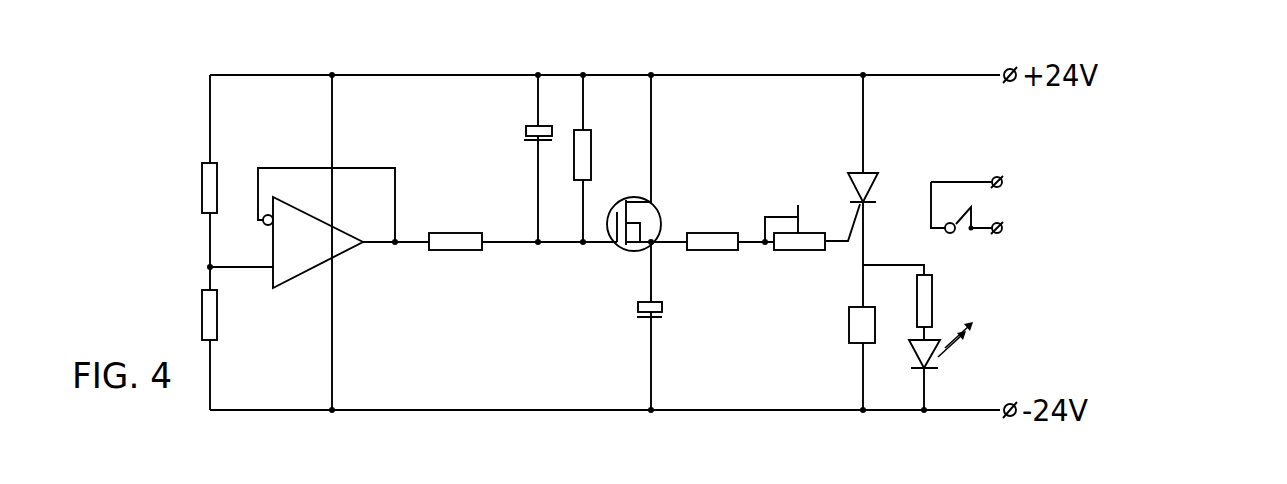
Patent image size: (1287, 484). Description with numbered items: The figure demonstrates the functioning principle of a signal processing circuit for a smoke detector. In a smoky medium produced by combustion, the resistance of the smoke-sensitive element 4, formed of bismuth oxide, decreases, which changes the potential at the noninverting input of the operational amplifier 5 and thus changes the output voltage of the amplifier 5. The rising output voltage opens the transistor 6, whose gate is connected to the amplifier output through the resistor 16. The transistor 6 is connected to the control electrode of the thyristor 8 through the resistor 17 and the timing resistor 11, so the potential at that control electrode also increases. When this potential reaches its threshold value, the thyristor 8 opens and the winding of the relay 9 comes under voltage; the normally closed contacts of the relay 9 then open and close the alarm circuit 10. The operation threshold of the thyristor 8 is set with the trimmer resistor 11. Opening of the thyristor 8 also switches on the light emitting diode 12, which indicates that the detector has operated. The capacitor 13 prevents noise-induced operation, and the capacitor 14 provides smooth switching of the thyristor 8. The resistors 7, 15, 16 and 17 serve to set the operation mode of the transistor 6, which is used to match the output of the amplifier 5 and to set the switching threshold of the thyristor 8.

The smoke-sensitive element 4 is at (217, 315).
The operational amplifier 5 is at (345, 255).
The transistor 6 is at (622, 249).
The resistor 7 is at (217, 164).
The thyristor 8 is at (855, 173).
The relay 9 is at (864, 345).
The alarm circuit 10 is at (981, 205).
The timing resistor 11 is at (780, 250).
The light emitting diode 12 is at (938, 357).
The capacitor 13 is at (524, 131).
The capacitor 14 is at (662, 312).
The resistor 15 is at (591, 138).
The resistor 16 is at (440, 250).
The resistor 17 is at (695, 250).